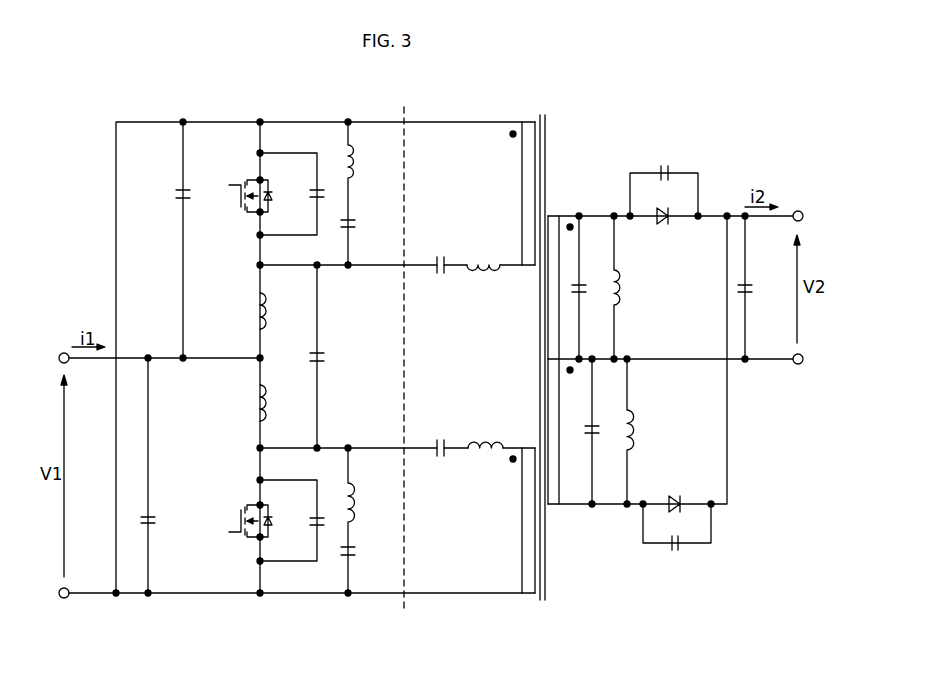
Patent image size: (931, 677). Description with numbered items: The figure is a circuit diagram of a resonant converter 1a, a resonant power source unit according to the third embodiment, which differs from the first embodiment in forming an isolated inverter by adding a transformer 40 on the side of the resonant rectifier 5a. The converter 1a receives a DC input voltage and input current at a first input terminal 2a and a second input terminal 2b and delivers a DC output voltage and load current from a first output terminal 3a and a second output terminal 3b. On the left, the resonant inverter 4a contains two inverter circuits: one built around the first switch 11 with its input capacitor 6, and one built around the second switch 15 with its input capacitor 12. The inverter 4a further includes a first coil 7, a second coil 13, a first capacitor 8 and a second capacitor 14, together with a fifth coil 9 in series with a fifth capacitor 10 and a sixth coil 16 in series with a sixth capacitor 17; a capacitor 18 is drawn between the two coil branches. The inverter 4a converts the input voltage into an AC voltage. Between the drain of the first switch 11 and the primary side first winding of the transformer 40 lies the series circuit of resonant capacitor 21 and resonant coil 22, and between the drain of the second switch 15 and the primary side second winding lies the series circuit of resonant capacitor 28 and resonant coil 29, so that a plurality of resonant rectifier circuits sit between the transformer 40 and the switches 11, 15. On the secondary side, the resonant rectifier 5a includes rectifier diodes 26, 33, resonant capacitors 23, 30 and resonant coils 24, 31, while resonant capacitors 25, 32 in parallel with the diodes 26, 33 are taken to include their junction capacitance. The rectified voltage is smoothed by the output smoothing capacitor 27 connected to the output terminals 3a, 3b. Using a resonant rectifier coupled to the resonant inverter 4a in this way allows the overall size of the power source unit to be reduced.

The resonant converter 1a is at (422, 107).
The first input terminal 2a is at (65, 353).
The second input terminal 2b is at (66, 599).
The first output terminal 3a is at (802, 210).
The second output terminal 3b is at (800, 366).
The resonant inverter 4a is at (261, 603).
The resonant rectifier 5a is at (577, 598).
The input capacitor 6 is at (156, 522).
The first coil 7 is at (272, 403).
The first capacitor 8 is at (308, 518).
The fifth coil 9 is at (358, 504).
The fifth capacitor 10 is at (356, 551).
The first switch 11 is at (242, 506).
The input capacitor 12 is at (176, 195).
The second coil 13 is at (270, 313).
The second capacitor 14 is at (309, 190).
The second switch 15 is at (239, 182).
The sixth coil 16 is at (356, 160).
The sixth capacitor 17 is at (356, 224).
The intermediate capacitor 18 is at (326, 359).
The resonant capacitor 21 is at (440, 440).
The resonant coil 22 is at (484, 440).
The resonant capacitor 23 is at (588, 292).
The resonant coil 24 is at (623, 287).
The resonant capacitor 25 is at (664, 169).
The rectifier diode 26 is at (663, 225).
The output smoothing capacitor 27 is at (752, 289).
The resonant capacitor 28 is at (440, 275).
The resonant coil 29 is at (484, 278).
The resonant capacitor 30 is at (596, 434).
The resonant coil 31 is at (636, 430).
The resonant capacitor 32 is at (675, 552).
The rectifier diode 33 is at (674, 495).
The transformer 40 is at (537, 121).